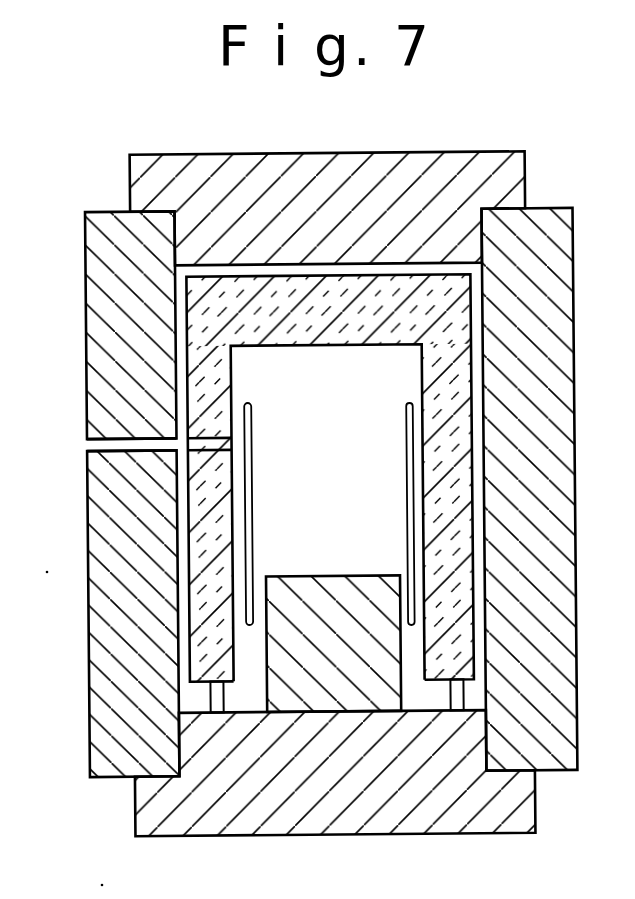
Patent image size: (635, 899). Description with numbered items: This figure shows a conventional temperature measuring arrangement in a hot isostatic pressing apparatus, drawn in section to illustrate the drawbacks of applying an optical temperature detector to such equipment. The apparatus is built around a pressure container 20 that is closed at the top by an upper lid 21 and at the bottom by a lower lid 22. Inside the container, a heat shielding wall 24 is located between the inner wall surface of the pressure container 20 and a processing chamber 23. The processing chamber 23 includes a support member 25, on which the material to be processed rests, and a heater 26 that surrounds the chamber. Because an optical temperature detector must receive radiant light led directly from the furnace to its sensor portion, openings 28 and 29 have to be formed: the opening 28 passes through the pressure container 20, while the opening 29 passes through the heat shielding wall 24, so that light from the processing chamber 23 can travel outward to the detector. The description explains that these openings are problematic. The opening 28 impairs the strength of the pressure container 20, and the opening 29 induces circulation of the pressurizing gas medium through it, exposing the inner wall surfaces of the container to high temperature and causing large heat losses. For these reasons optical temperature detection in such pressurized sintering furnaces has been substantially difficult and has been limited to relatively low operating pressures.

The pressure container 20 is at (542, 244).
The upper lid 21 is at (470, 164).
The lower lid 22 is at (494, 812).
The processing chamber 23 is at (375, 441).
The heat shielding wall 24 is at (455, 338).
The support member 25 is at (342, 590).
The heater 26 is at (415, 517).
The opening 28 is at (132, 436).
The opening 29 is at (212, 436).